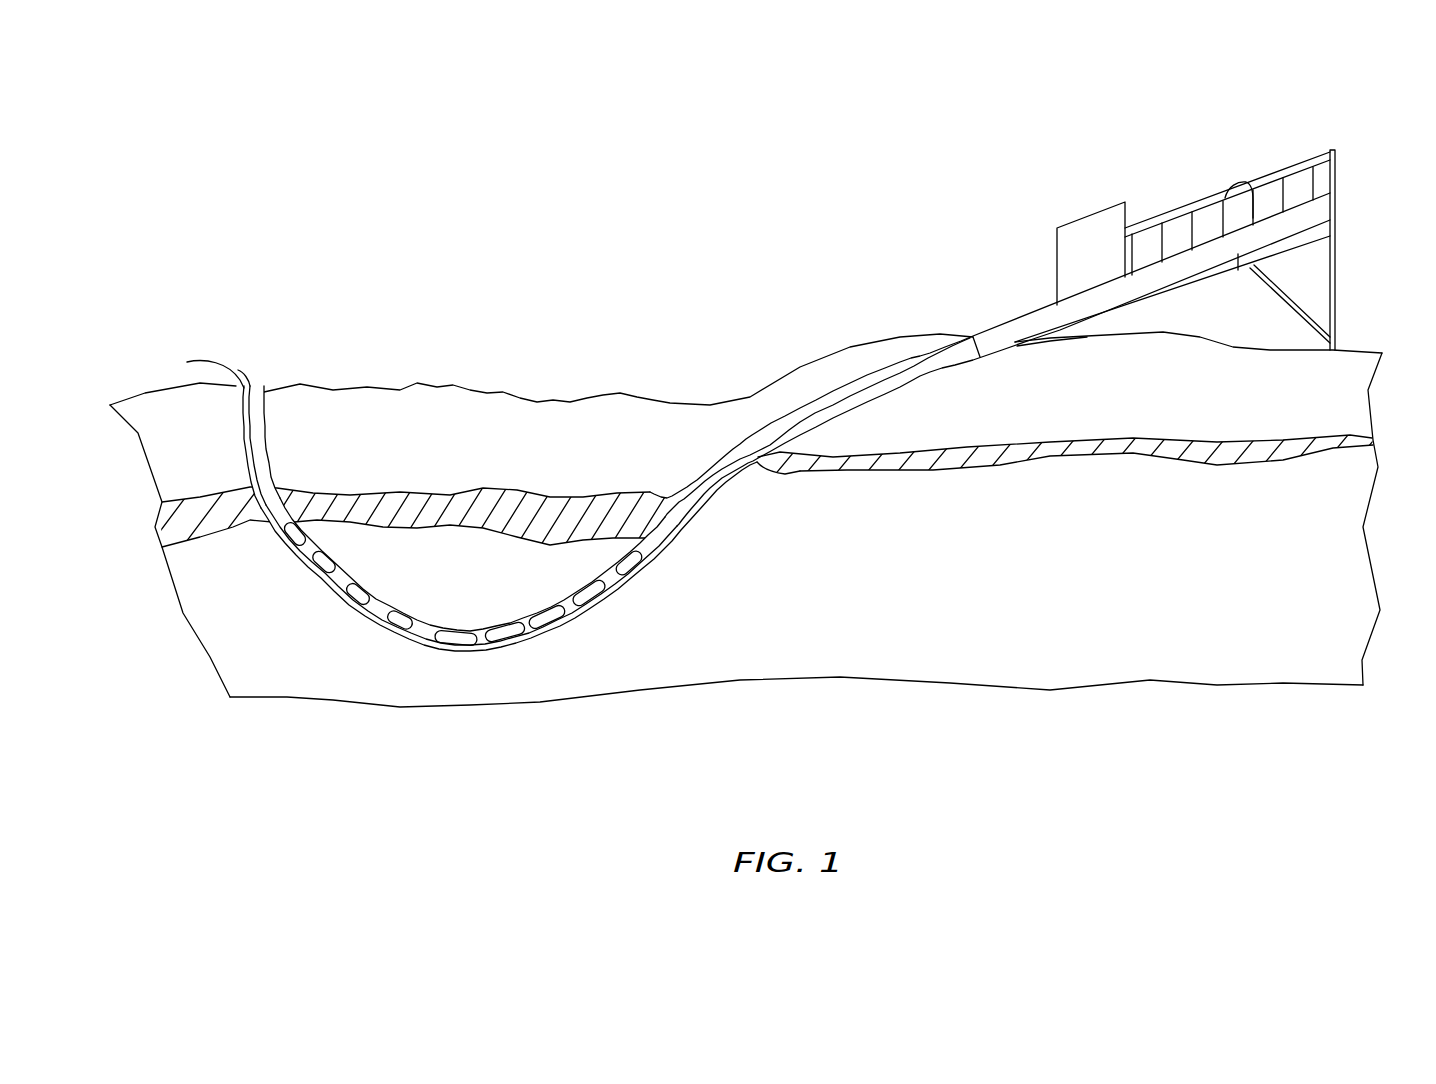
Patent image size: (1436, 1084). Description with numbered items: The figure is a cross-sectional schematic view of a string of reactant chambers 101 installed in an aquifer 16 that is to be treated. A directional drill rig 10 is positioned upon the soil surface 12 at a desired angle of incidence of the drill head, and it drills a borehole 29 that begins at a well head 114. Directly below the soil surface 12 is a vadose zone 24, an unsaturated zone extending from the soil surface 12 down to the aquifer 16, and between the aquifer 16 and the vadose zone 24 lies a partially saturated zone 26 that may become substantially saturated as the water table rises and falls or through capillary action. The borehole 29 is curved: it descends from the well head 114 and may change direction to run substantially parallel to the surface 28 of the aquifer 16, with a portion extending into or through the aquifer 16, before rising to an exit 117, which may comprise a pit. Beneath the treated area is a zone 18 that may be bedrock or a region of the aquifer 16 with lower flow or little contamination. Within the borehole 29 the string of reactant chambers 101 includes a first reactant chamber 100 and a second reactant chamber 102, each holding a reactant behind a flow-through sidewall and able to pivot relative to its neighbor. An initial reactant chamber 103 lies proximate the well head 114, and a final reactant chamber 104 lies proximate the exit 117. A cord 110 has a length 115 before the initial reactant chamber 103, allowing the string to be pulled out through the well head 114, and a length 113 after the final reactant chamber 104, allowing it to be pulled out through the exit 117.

The directional drill rig 10 is at (1175, 228).
The soil surface 12 is at (147, 390).
The aquifer 16 is at (1083, 648).
The zone below the aquifer 18 is at (1269, 764).
The vadose zone 24 is at (1355, 363).
The partially saturated zone 26 is at (585, 510).
The surface of aquifer 28 is at (1300, 455).
The borehole 29 is at (800, 407).
The first reactant chamber 100 is at (332, 577).
The string of reactant chambers 101 is at (480, 647).
The second reactant chamber 102 is at (357, 613).
The initial reactant chamber 103 is at (630, 570).
The final reactant chamber 104 is at (300, 537).
The cord 110 is at (777, 473).
The cord length after final reactant chamber 113 is at (187, 362).
The well head 114 is at (975, 337).
The cord length before initial reactant chamber 115 is at (980, 337).
The exit 117 is at (257, 393).